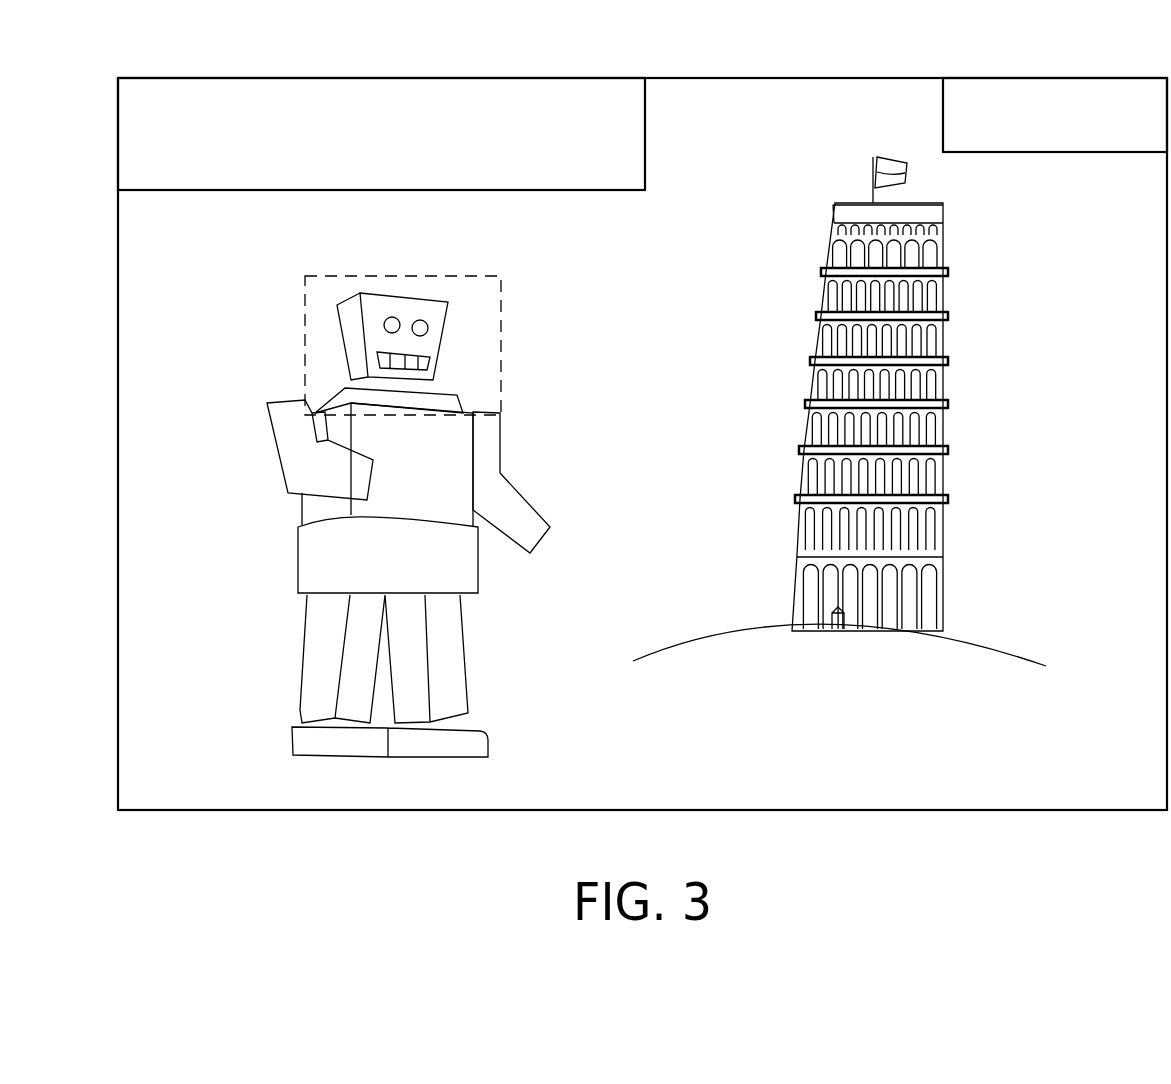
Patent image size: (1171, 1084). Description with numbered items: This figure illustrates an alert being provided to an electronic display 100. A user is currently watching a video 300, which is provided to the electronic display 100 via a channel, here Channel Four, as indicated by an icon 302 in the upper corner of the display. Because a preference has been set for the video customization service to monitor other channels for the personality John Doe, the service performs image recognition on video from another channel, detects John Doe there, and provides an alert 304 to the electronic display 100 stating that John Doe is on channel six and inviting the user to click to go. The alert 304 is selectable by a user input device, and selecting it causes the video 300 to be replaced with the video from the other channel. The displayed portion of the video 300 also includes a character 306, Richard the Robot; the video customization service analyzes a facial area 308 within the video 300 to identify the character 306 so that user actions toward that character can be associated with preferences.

The electronic display 100 is at (118, 112).
The video 300 is at (135, 286).
The icon 302 is at (943, 108).
The alert 304 is at (645, 120).
The character 306 is at (478, 580).
The facial area 308 is at (501, 320).